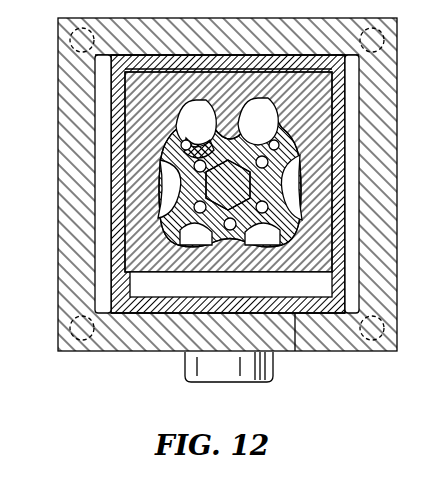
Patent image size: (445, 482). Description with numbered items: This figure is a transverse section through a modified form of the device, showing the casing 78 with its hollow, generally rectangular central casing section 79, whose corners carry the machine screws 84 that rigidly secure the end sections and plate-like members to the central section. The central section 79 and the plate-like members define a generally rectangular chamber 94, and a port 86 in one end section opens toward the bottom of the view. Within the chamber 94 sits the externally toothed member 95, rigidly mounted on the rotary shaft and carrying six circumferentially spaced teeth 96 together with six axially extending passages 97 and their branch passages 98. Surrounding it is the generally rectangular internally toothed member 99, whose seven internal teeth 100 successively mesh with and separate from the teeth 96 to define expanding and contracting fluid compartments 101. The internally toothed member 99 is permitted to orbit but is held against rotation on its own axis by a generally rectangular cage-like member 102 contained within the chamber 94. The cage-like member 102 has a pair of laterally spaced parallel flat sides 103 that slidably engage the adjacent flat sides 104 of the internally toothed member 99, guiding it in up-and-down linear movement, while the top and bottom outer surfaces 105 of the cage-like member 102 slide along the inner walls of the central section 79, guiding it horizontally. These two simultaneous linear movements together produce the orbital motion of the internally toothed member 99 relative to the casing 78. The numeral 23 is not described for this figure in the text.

The shaft 23 is at (228, 185).
The casing 78 is at (397, 112).
The central casing section 79 is at (385, 153).
The machine screws 84 is at (82, 28).
The port 86 is at (246, 385).
The chamber 94 is at (100, 220).
The externally toothed member 95 is at (258, 121).
The teeth 96 is at (286, 142).
The axially extending passages 97 is at (248, 197).
The branch passages 98 is at (243, 177).
The internally toothed member 99 is at (130, 272).
The internal teeth 100 is at (163, 130).
The fluid compartments 101 is at (194, 100).
The cage-like member 102 is at (153, 308).
The flat sides 103 is at (231, 284).
The flat sides 104 is at (125, 131).
The top and bottom outer surfaces 105 is at (125, 55).